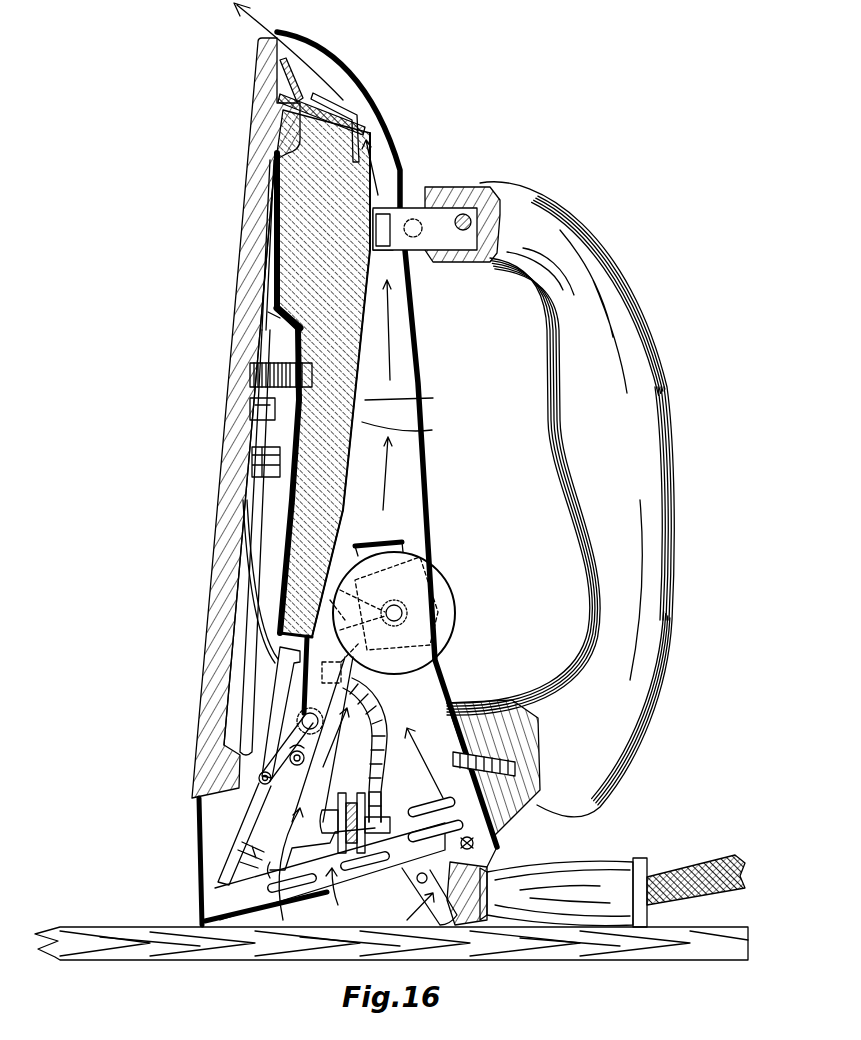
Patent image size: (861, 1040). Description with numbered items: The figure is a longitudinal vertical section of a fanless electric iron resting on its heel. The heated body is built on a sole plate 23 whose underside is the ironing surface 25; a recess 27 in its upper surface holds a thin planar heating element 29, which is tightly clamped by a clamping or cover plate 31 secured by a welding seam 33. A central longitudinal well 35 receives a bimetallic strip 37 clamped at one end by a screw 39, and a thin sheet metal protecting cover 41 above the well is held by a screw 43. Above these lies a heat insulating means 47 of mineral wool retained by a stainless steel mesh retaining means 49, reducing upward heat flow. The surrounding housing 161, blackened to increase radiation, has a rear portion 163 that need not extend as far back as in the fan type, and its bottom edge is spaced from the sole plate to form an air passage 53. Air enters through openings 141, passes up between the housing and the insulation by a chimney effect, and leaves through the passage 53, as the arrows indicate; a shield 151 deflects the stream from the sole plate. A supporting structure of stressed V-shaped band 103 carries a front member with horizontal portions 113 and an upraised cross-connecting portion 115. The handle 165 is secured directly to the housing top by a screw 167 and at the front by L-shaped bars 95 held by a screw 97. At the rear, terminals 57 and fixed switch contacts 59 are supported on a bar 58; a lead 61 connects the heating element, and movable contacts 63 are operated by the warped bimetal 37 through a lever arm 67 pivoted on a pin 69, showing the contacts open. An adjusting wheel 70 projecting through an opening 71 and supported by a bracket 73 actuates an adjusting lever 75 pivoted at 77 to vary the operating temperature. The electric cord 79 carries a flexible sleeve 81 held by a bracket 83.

The sole plate 23 is at (256, 123).
The ironing surface 25 is at (250, 154).
The recess 27 is at (270, 179).
The heating element 29 is at (276, 197).
The clamping or cover plate 31 is at (282, 227).
The welding seam 33 is at (277, 313).
The well 35 is at (255, 403).
The bimetallic strip 37 is at (250, 575).
The screw 39 is at (262, 455).
The protecting cover 41 is at (280, 600).
The screw 43 is at (265, 372).
The heat insulating means 47 is at (410, 398).
The top holding or retaining means 49 is at (407, 431).
The air passage or slot 53 is at (268, 42).
The electric terminals 57 is at (378, 852).
The bar 58 is at (354, 790).
The fixed switch contacts 59 is at (275, 880).
The lead 61 is at (383, 718).
The movable contacts 63 is at (245, 860).
The lever arm 67 is at (287, 695).
The pin 69 is at (259, 778).
The wheel 70 is at (455, 615).
The opening 71 is at (433, 560).
The bracket 73 is at (387, 542).
The adjusting lever 75 is at (370, 672).
The pivot 77 is at (314, 727).
The electric cord 79 is at (697, 890).
The flexible protector or sleeve 81 is at (582, 880).
The bracket 83 is at (452, 908).
The complementary bars 95 is at (427, 203).
The screw 97 is at (462, 230).
The strip or band 103 is at (290, 100).
The horizontally extending portions 113 is at (359, 117).
The upraised cross-connecting portion 115 is at (372, 262).
The openings 141 is at (475, 844).
The shield 151 is at (293, 82).
The housing 161 is at (428, 536).
The rear portion 163 is at (318, 893).
The handle 165 is at (666, 450).
The screw 167 is at (540, 792).